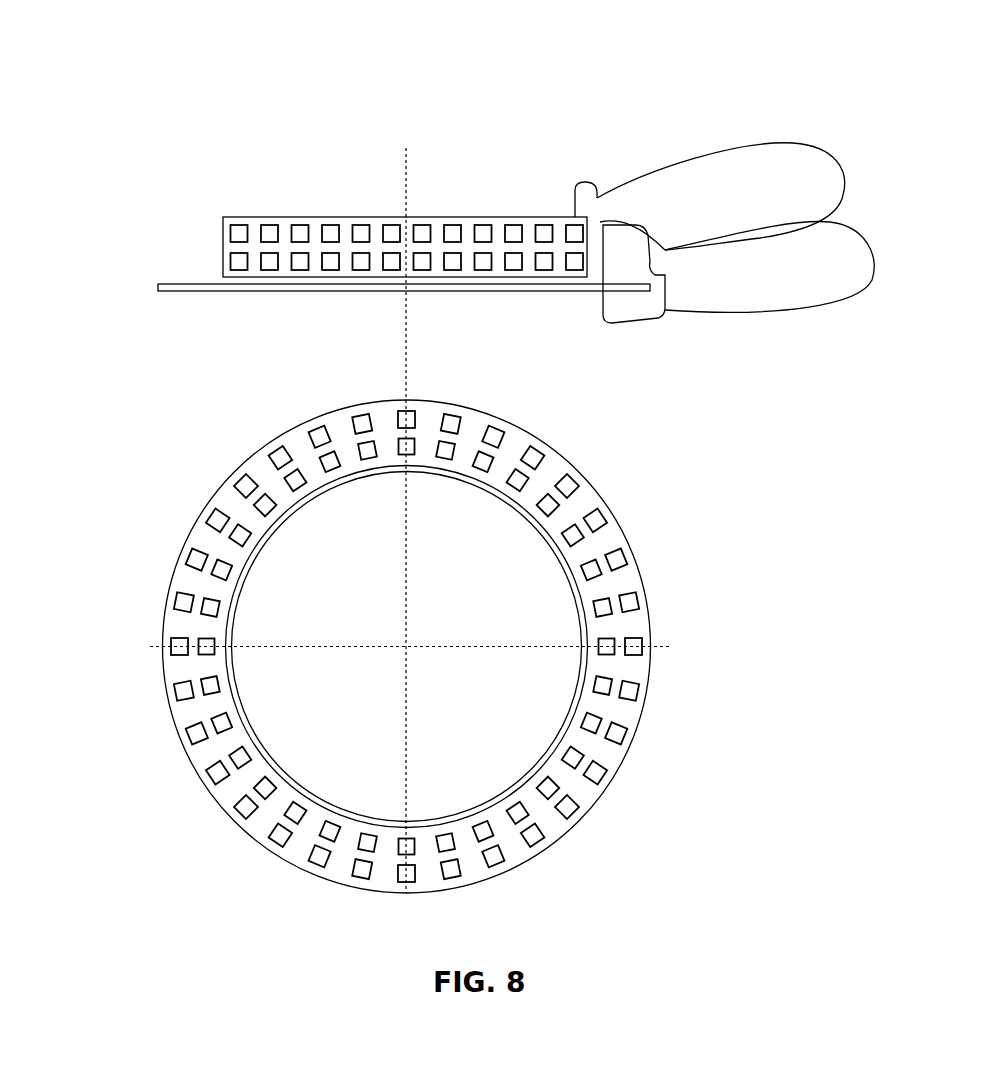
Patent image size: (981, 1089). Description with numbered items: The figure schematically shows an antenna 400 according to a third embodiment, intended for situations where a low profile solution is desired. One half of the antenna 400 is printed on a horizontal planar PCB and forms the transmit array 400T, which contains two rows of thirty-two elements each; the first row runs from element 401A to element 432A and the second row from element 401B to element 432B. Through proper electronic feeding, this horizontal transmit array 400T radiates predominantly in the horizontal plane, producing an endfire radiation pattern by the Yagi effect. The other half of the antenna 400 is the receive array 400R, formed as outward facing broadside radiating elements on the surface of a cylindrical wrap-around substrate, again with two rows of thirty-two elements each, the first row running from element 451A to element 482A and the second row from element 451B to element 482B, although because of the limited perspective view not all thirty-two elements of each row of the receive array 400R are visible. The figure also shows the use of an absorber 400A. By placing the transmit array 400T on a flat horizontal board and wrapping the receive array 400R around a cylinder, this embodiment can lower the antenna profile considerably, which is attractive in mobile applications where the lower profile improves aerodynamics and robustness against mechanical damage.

The antenna 400 is at (593, 107).
The receive array 400R is at (465, 217).
The absorber 400A is at (223, 277).
The transmit array 400T is at (580, 487).
The receive array element 482A is at (552, 230).
The receive array element 482B is at (545, 262).
The receive array element 451A is at (566, 268).
The receive array element 451B is at (575, 272).
The transmit array element 401A is at (629, 691).
The transmit array element 401B is at (603, 685).
The transmit array element 432A is at (618, 735).
The transmit array element 432B is at (593, 724).